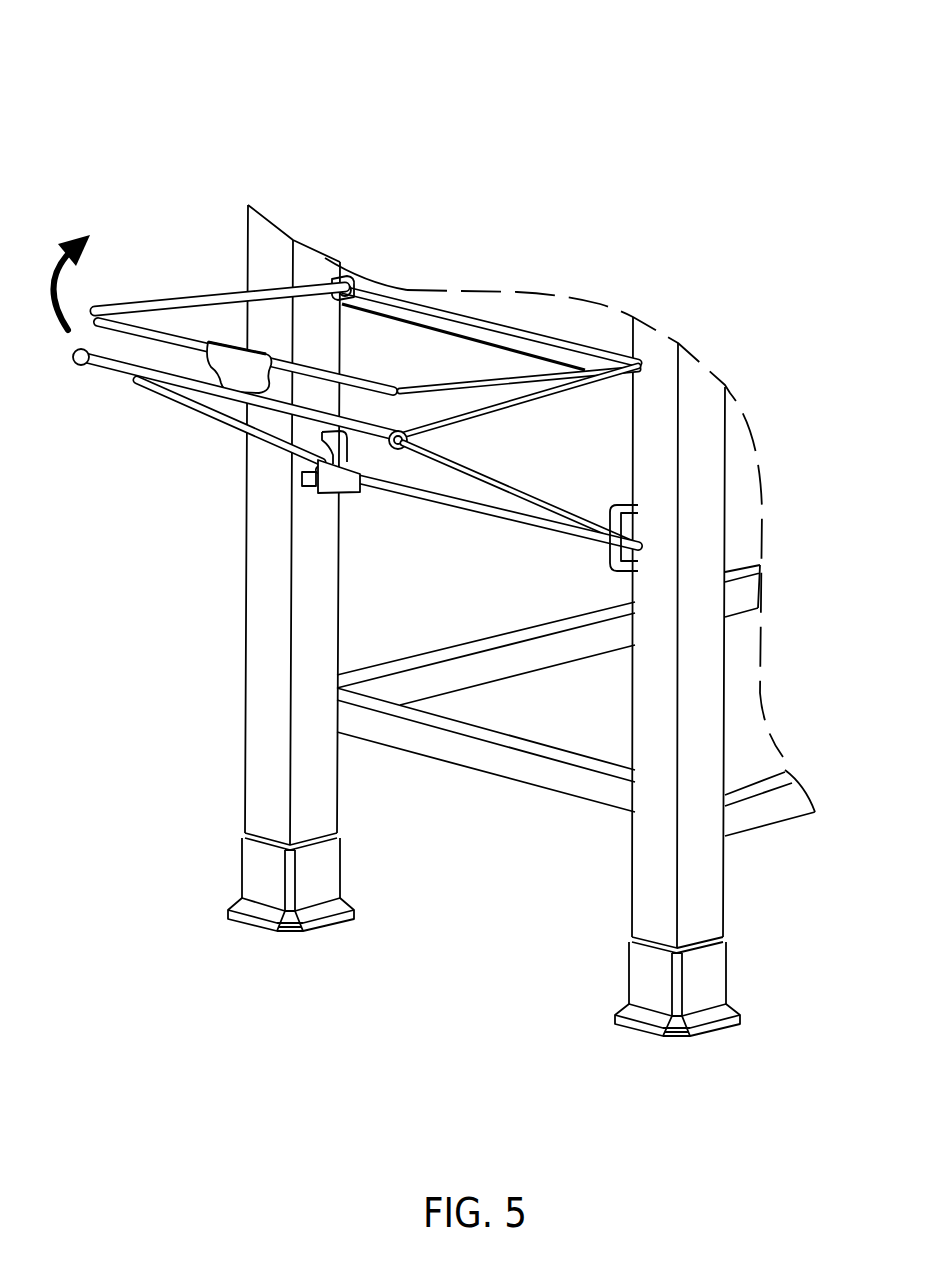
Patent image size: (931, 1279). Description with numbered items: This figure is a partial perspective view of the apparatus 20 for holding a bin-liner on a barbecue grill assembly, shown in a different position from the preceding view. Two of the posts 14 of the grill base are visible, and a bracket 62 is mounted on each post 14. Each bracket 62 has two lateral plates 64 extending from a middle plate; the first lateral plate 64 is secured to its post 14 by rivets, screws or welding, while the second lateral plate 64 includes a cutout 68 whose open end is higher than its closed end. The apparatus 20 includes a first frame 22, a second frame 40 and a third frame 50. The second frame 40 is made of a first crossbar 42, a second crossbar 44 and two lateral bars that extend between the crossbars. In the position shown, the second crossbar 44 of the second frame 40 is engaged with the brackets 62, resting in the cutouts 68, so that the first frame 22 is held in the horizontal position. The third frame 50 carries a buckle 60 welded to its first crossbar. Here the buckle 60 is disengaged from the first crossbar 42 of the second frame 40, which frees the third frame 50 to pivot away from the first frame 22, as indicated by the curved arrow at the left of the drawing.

The post 14 is at (700, 890).
The apparatus 20 is at (198, 52).
The first frame 22 is at (214, 277).
The second frame 40 is at (120, 327).
The first crossbar 42 is at (270, 404).
The second crossbar 44 is at (477, 508).
The third frame 50 is at (160, 265).
The buckle 60 is at (242, 356).
The bracket 62 is at (272, 503).
The lateral plate 64 is at (347, 485).
The cutout 68 is at (615, 540).